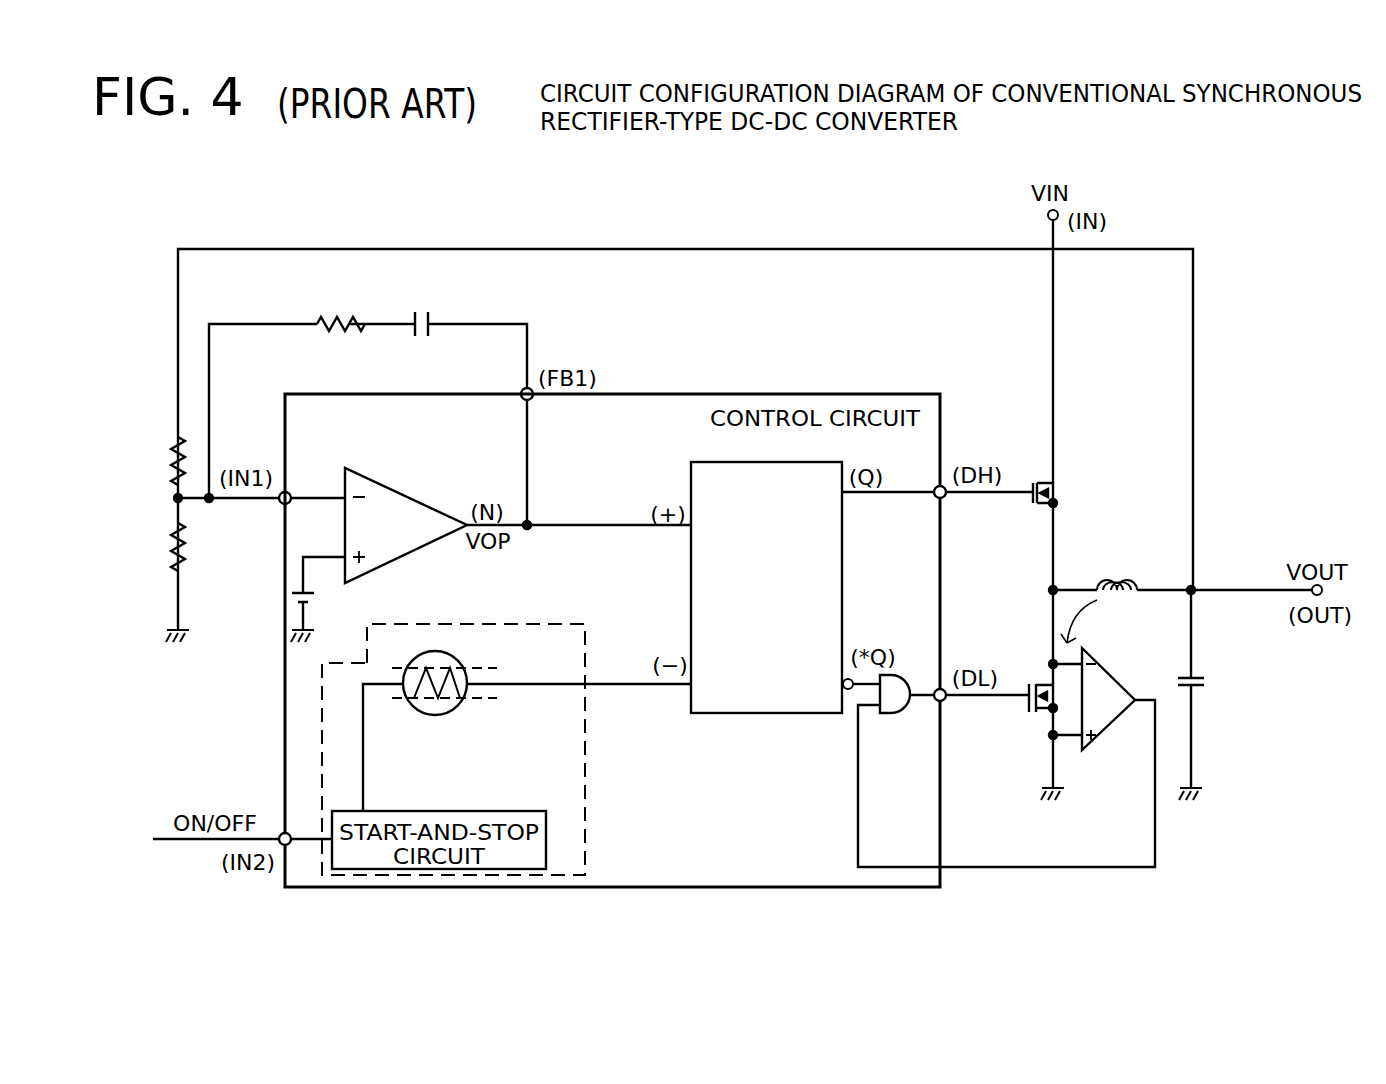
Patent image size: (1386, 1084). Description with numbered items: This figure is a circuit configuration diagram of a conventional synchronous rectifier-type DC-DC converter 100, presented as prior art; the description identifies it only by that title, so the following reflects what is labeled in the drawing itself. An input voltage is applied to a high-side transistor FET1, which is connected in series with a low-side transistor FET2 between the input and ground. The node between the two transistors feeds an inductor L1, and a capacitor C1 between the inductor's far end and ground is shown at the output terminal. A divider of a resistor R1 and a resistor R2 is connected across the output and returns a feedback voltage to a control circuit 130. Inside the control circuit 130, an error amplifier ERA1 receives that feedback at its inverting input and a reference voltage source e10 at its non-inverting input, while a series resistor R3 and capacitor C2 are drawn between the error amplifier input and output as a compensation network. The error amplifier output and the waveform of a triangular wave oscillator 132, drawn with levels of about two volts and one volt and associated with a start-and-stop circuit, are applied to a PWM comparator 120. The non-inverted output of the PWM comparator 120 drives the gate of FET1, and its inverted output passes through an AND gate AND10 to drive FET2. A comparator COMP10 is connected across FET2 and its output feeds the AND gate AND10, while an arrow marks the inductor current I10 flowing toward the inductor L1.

The synchronous rectifier-type DC-DC converter 100 is at (1203, 207).
The PWM comparator 120 is at (799, 714).
The control circuit 130 is at (528, 888).
The triangular wave oscillator 132 is at (435, 652).
The resistor R1 is at (158, 459).
The resistor R2 is at (158, 547).
The resistor R3 is at (341, 309).
The output capacitor C1 is at (1207, 695).
The capacitor C2 is at (421, 311).
The inductor L1 is at (1117, 571).
The high-side switching transistor FET1 is at (1022, 507).
The low-side synchronous rectifier transistor FET2 is at (1020, 715).
The error amplifier ERA1 is at (385, 482).
The reference voltage source e10 is at (322, 599).
The AND gate AND10 is at (900, 708).
The comparator COMP10 is at (1099, 714).
The inductor current I10 is at (1089, 621).